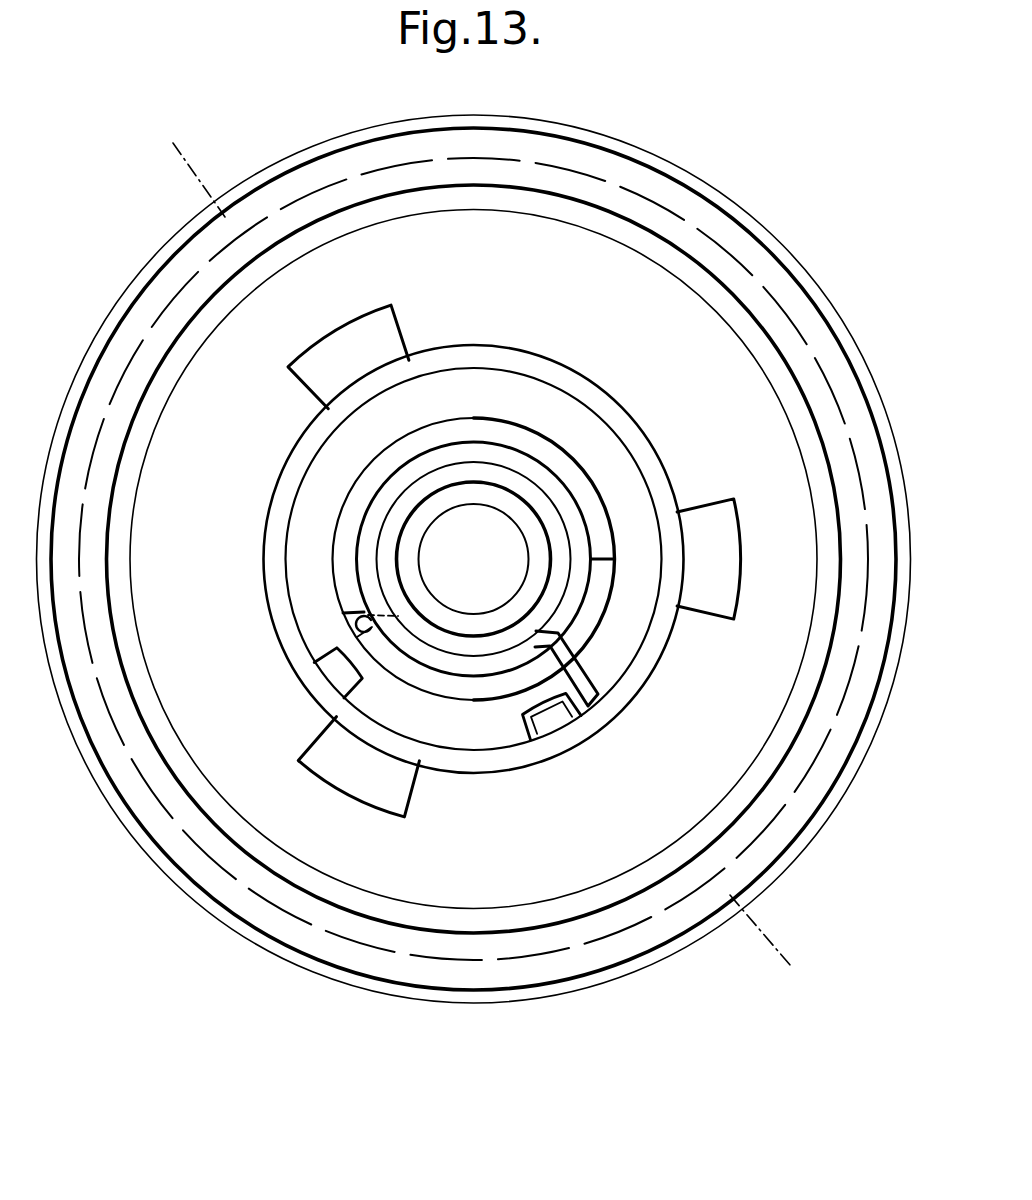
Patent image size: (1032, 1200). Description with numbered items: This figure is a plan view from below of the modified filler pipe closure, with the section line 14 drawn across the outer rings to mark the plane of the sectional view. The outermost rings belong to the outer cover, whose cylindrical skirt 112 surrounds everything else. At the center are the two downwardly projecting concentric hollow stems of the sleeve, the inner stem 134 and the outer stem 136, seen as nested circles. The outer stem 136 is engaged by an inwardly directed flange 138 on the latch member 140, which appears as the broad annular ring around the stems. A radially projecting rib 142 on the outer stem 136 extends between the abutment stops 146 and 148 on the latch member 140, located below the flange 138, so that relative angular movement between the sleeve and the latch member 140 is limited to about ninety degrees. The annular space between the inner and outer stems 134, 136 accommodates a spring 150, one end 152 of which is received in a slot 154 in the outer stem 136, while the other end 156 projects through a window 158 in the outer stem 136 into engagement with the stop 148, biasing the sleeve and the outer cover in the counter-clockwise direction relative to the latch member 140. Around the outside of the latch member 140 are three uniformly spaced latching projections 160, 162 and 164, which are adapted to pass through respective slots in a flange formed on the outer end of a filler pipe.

The section line 14 is at (180, 141).
The cylindrical skirt 112 is at (758, 268).
The inner stem 134 is at (427, 606).
The outer stem 136 is at (500, 430).
The inwardly directed flange 138 is at (323, 487).
The latch member 140 is at (275, 651).
The radially projecting rib 142 is at (521, 728).
The abutment stop 146 is at (340, 672).
The abutment stop 148 is at (567, 710).
The spring 150 is at (577, 520).
The end of spring 152 is at (362, 633).
The slot 154 is at (343, 613).
The other end of spring 156 is at (583, 679).
The window 158 is at (583, 621).
The latching projection 160 is at (345, 772).
The latching projection 162 is at (377, 340).
The latching projection 164 is at (721, 576).